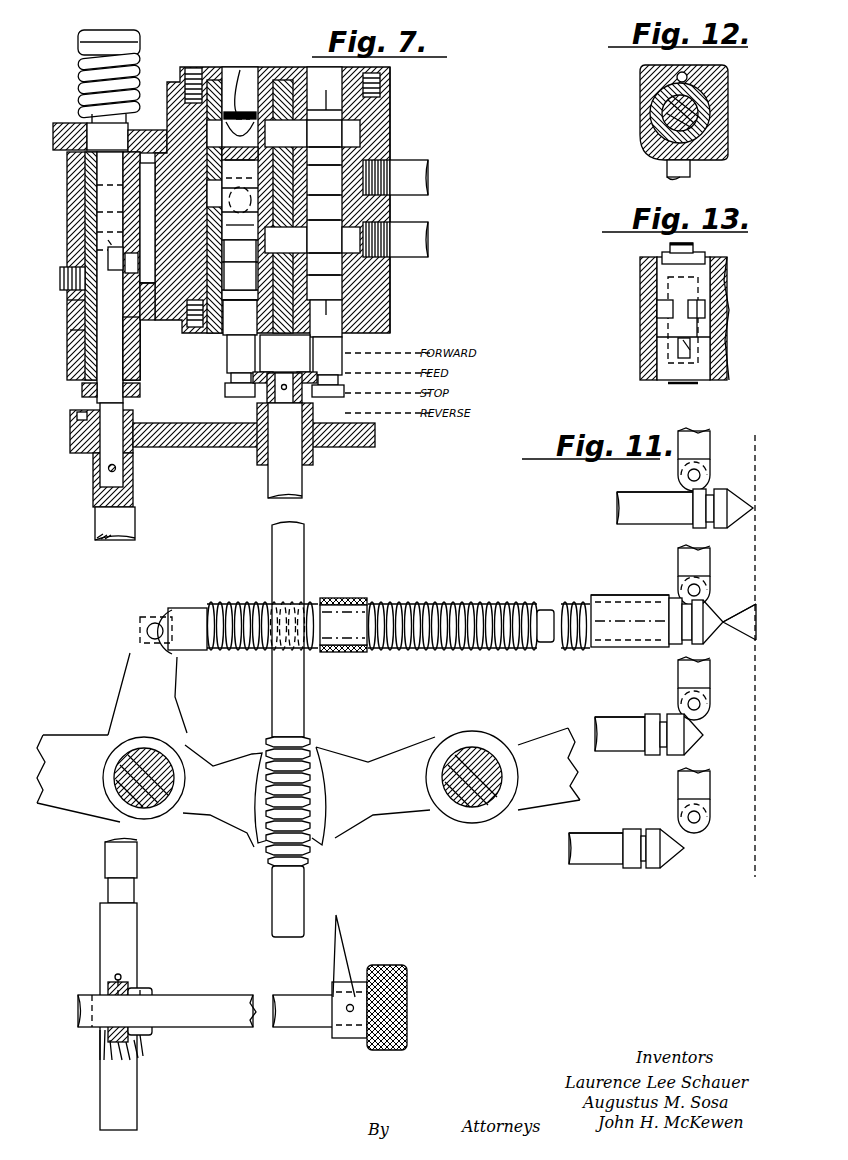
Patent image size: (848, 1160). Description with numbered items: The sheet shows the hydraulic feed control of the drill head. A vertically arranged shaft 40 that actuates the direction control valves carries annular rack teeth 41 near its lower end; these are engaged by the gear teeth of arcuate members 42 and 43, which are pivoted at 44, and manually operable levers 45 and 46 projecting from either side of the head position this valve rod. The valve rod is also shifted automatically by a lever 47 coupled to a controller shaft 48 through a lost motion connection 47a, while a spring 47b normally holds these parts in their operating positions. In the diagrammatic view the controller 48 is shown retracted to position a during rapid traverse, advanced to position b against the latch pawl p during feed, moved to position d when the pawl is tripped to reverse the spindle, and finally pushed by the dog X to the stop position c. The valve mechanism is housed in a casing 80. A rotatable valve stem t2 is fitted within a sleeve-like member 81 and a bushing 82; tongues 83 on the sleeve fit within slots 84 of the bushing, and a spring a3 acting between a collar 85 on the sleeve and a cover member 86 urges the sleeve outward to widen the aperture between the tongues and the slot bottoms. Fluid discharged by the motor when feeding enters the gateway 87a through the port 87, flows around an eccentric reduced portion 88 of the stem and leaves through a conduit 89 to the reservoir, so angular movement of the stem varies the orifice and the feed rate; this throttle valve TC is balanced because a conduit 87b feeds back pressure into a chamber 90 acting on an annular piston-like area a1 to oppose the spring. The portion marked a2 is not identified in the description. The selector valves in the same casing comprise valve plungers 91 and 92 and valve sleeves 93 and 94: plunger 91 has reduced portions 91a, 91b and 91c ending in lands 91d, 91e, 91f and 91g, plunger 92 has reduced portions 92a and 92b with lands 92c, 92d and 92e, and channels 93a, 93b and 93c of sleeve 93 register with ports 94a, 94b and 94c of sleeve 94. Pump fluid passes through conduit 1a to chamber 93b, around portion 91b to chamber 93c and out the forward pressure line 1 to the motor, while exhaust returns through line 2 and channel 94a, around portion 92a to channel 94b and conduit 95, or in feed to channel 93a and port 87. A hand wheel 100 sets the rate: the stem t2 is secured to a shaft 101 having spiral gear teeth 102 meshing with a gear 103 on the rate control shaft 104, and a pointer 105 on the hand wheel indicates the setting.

In FIG. 7, the forward pressure line 1 is at (208, 70).
In FIG. 7, the conduit 1a is at (190, 142).
In FIG. 7, the line 2 is at (412, 258).
In FIG. 7, the shaft 40 is at (298, 530).
In FIG. 7, the annular rack teeth 41 is at (302, 742).
In FIG. 7, the arcuate member 42 is at (373, 791).
In FIG. 7, the arcuate member 43 is at (225, 796).
In FIG. 7, the pivot 44 is at (160, 768).
In FIG. 7, the manually operable lever 45 is at (549, 769).
In FIG. 7, the manually operable lever 46 is at (78, 778).
In FIG. 7, the lever 47 is at (145, 694).
In FIG. 7, the lost motion connection 47a is at (180, 657).
In FIG. 7, the spring 47b is at (224, 606).
In FIG. 7, the controller shaft 48 is at (330, 604).
In FIG. 11, the controller shaft 48 is at (637, 526).
In FIG. 7, the casing 80 is at (388, 100).
In FIG. 12, the casing 80 is at (642, 104).
In FIG. 13, the casing 80 is at (648, 322).
In FIG. 7, the sleeve-like member 81 is at (88, 197).
In FIG. 13, the sleeve-like member 81 is at (662, 285).
In FIG. 7, the bushing 82 is at (85, 350).
In FIG. 12, the bushing 82 is at (656, 126).
In FIG. 13, the bushing 82 is at (660, 355).
In FIG. 13, the tongues 83 is at (684, 312).
In FIG. 13, the slots 84 is at (684, 345).
In FIG. 7, the collar 85 is at (78, 49).
In FIG. 7, the cover member 86 is at (53, 142).
In FIG. 7, the port 87 is at (172, 322).
In FIG. 7, the gateway 87a is at (70, 305).
In FIG. 7, the conduit 87b is at (122, 203).
In FIG. 12, the conduit 87b is at (675, 75).
In FIG. 7, the reduced portion 88 is at (108, 265).
In FIG. 12, the reduced portion 88 is at (700, 120).
In FIG. 7, the conduit 89 is at (85, 284).
In FIG. 12, the conduit 89 is at (668, 172).
In FIG. 7, the chamber 90 is at (70, 177).
In FIG. 7, the valve plunger 91 is at (232, 360).
In FIG. 7, the reduced portion 91a is at (240, 276).
In FIG. 7, the reduced portion 91b is at (240, 177).
In FIG. 7, the reduced portion 91c is at (242, 112).
In FIG. 7, the raised land 91d is at (240, 313).
In FIG. 7, the raised land 91e is at (240, 251).
In FIG. 7, the raised land 91f is at (247, 95).
In FIG. 7, the raised land 91g is at (240, 74).
In FIG. 7, the valve plunger 92 is at (342, 344).
In FIG. 7, the reduced portion 92a is at (324, 280).
In FIG. 7, the reduced portion 92b is at (324, 157).
In FIG. 7, the land 92c is at (327, 316).
In FIG. 7, the land 92d is at (324, 210).
In FIG. 7, the land 92e is at (324, 94).
In FIG. 7, the valve sleeve 93 is at (228, 330).
In FIG. 7, the channel 93a is at (240, 228).
In FIG. 7, the channel 93b is at (241, 200).
In FIG. 7, the channel 93c is at (240, 164).
In FIG. 7, the valve sleeve 94 is at (285, 372).
In FIG. 7, the port 94a is at (324, 244).
In FIG. 7, the port 94b is at (324, 183).
In FIG. 7, the port 94c is at (324, 137).
In FIG. 7, the conduit 95 is at (412, 160).
In FIG. 7, the hand wheel 100 is at (408, 965).
In FIG. 7, the shaft 101 is at (130, 530).
In FIG. 7, the spiral gear teeth 102 is at (135, 1048).
In FIG. 7, the gear 103 is at (138, 990).
In FIG. 7, the rate control shaft 104 is at (232, 1005).
In FIG. 7, the pointer 105 is at (339, 916).
In FIG. 11, the position a is at (596, 823).
In FIG. 11, the position b is at (620, 707).
In FIG. 11, the position c is at (630, 584).
In FIG. 11, the position d is at (655, 481).
In FIG. 11, the latch pin p is at (710, 445).
In FIG. 11, the dog X is at (742, 612).
In FIG. 7, the annular piston-like area a1 is at (110, 277).
In FIG. 13, the annular piston-like area a1 is at (660, 260).
In FIG. 7, the passage a2 is at (106, 244).
In FIG. 13, the passage a2 is at (692, 345).
In FIG. 7, the spring a3 is at (80, 96).
In FIG. 7, the throttle valve TC is at (70, 335).
In FIG. 7, the valve stem t2 is at (98, 405).